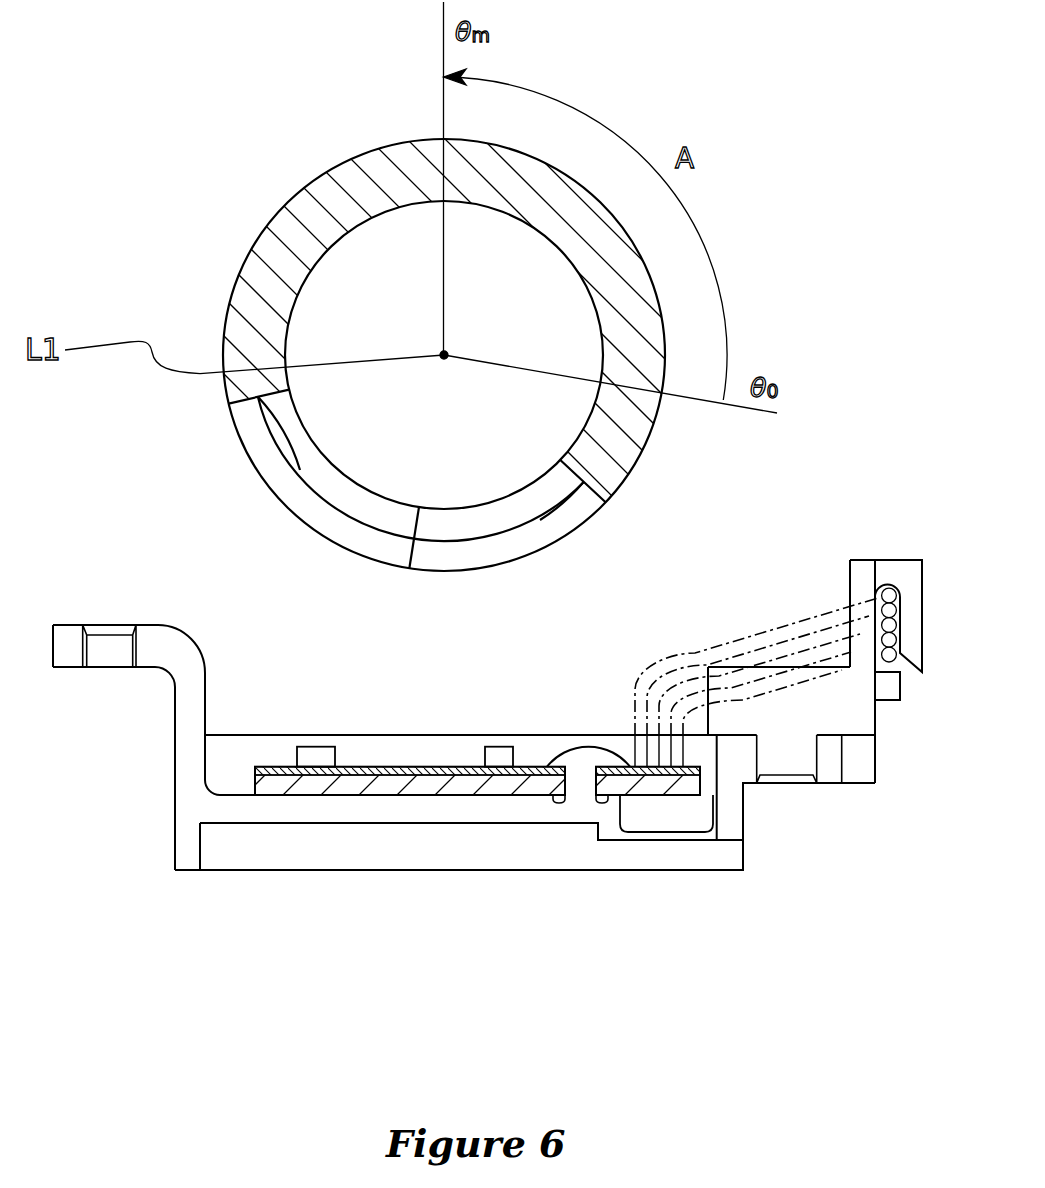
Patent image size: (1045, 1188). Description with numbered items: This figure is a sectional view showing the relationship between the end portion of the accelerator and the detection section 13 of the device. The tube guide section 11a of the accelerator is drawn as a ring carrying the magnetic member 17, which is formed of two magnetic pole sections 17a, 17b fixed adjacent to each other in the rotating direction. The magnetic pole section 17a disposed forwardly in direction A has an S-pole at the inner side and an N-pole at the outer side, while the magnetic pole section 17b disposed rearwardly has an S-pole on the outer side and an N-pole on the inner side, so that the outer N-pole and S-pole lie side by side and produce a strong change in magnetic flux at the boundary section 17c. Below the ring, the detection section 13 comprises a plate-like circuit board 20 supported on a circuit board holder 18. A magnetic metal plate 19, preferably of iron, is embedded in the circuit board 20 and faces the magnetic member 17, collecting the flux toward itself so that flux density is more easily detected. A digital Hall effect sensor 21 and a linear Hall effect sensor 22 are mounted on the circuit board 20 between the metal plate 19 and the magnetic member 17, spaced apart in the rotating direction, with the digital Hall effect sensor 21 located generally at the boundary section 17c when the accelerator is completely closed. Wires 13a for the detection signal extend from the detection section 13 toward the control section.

The tube guide section 11a is at (257, 236).
The detection section 13 is at (160, 761).
The wires 13a is at (747, 630).
The magnetic member 17 is at (406, 527).
The magnetic pole section 17a is at (557, 530).
The magnetic pole section 17b is at (255, 438).
The boundary section 17c is at (407, 553).
The circuit board holder 18 is at (313, 824).
The magnetic metal plate 19 is at (515, 785).
The circuit board 20 is at (482, 884).
The digital Hall effect sensor 21 is at (318, 746).
The linear Hall effect sensor 22 is at (500, 746).